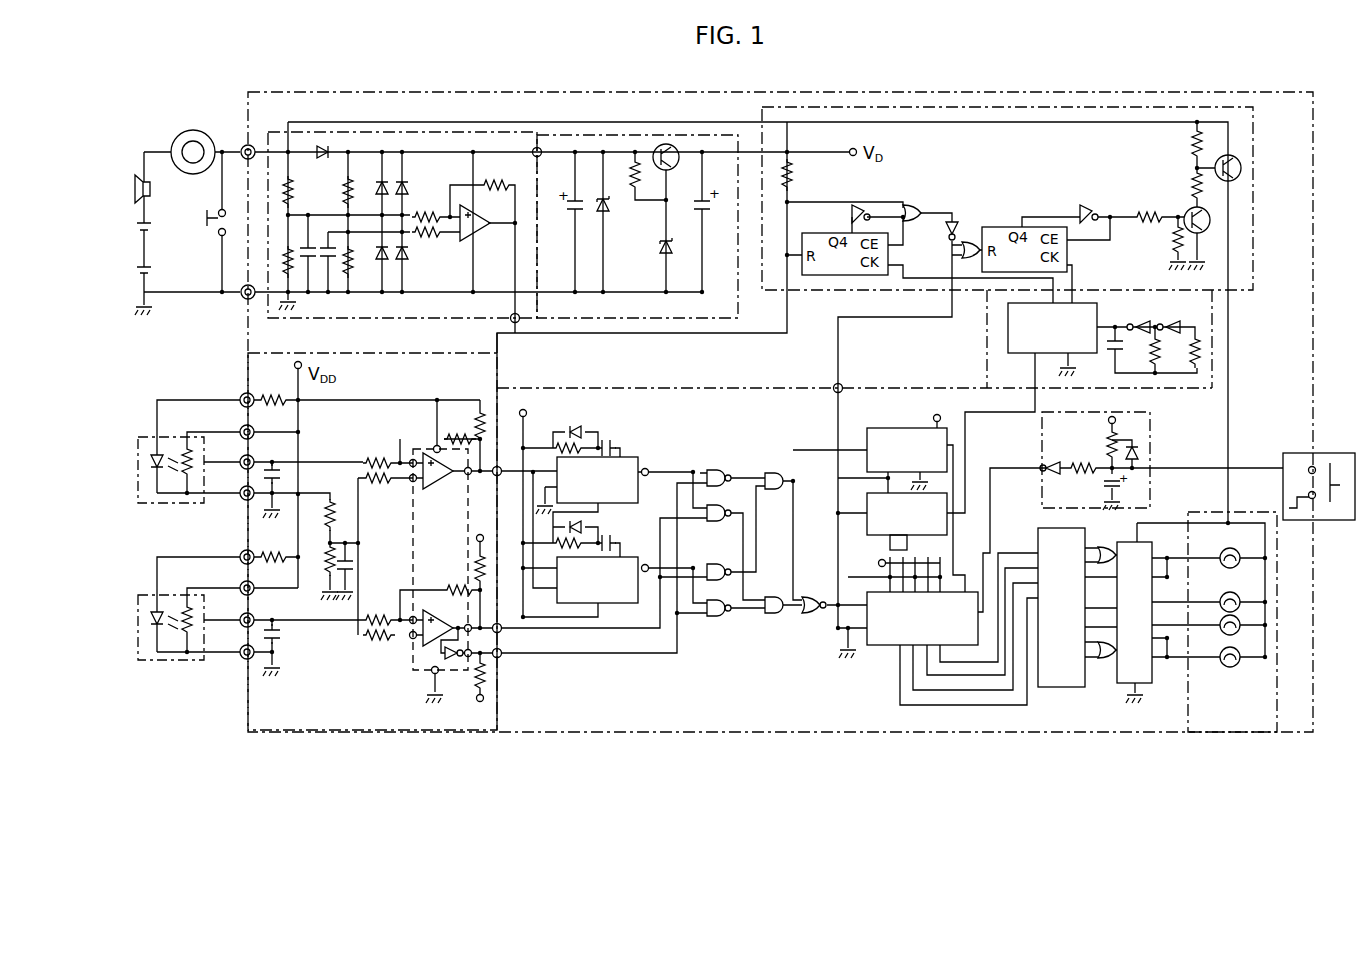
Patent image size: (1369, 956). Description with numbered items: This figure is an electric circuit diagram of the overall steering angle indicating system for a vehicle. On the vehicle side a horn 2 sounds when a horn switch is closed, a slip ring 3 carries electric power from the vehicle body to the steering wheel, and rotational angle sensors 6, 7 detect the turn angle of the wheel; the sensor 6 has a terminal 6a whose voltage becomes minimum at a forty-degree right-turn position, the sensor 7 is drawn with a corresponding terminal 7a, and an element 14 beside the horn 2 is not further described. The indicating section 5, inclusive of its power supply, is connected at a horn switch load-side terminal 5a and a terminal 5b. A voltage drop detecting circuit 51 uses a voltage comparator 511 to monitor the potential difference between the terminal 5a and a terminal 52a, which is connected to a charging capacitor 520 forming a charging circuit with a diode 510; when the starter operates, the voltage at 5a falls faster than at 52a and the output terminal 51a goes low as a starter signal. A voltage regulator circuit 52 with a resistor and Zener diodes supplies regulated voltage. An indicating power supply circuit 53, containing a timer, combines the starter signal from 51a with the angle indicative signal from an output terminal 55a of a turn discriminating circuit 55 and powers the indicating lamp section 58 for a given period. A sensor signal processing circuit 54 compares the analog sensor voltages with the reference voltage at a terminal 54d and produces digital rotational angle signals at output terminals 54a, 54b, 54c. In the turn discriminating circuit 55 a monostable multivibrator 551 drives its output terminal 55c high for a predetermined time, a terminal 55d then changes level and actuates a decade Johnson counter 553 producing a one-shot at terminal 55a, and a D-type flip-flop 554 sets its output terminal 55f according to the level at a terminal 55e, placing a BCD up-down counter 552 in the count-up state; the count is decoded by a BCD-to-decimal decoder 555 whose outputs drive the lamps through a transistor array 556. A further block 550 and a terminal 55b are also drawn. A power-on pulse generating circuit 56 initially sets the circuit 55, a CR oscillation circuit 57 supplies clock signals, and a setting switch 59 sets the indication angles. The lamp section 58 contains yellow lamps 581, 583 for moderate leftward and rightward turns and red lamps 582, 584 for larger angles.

The horn 2 is at (153, 188).
The slip ring 3 is at (189, 130).
The battery 14 is at (152, 246).
The indicating section 5 is at (418, 92).
The horn switch load-side terminal 5a is at (243, 146).
The input terminal 5b is at (241, 298).
The voltage drop detecting circuit 51 is at (405, 132).
The diode 510 is at (327, 163).
The voltage comparator 511 is at (463, 238).
The output terminal 51a is at (511, 320).
The voltage regulator circuit 52 is at (660, 135).
The terminal 52a is at (540, 148).
The charging capacitor 520 is at (606, 212).
The indicating power supply circuit 53 is at (1257, 124).
The sensor signal processing circuit 54 is at (370, 718).
The output terminal 54a is at (499, 466).
The output terminal 54b is at (502, 632).
The output terminal 54c is at (502, 657).
The terminal 54d is at (361, 541).
The turn discriminating circuit 55 is at (714, 388).
The output terminal 55a is at (843, 384).
The output terminal 55b is at (646, 468).
The output terminal 55c is at (645, 564).
The terminal 55d is at (823, 610).
The terminal 55e is at (793, 477).
The output terminal 55f is at (939, 414).
The monostable multivibrator 550 is at (621, 455).
The monostable multivibrator 551 is at (640, 598).
The BCD up-down counter 552 is at (885, 647).
The decade Johnson counter 553 is at (866, 499).
The D-type flip-flop 554 is at (896, 428).
The BCD-to-decimal decoder 555 is at (1062, 688).
The transistor array 556 is at (1148, 686).
The power-on pulse generating circuit 56 is at (1152, 418).
The CR oscillation circuit 57 is at (1214, 318).
The indicating lamp section 58 is at (1270, 740).
The lamp 581 is at (1242, 600).
The lamp 582 is at (1222, 548).
The lamp 583 is at (1242, 630).
The lamp 584 is at (1232, 668).
The setting switch 59 is at (1328, 452).
The rotational angle sensor 6 is at (144, 507).
The terminal 6a is at (217, 462).
The rotational angle sensor 7 is at (157, 663).
The input terminals 7a is at (224, 622).